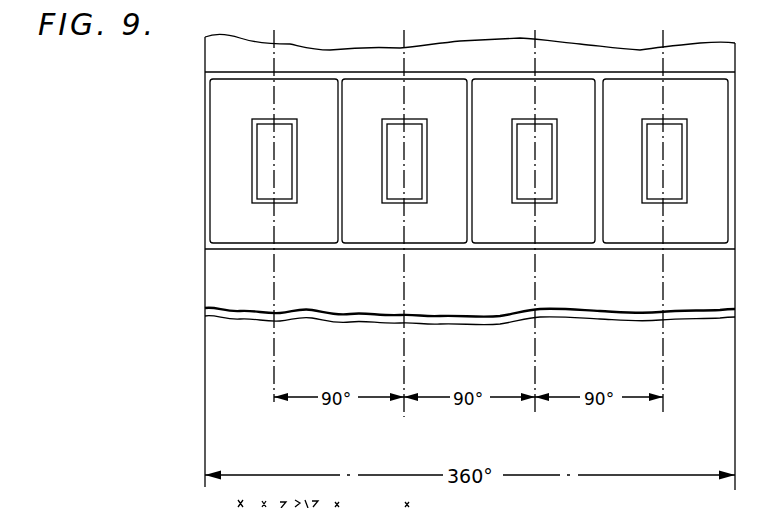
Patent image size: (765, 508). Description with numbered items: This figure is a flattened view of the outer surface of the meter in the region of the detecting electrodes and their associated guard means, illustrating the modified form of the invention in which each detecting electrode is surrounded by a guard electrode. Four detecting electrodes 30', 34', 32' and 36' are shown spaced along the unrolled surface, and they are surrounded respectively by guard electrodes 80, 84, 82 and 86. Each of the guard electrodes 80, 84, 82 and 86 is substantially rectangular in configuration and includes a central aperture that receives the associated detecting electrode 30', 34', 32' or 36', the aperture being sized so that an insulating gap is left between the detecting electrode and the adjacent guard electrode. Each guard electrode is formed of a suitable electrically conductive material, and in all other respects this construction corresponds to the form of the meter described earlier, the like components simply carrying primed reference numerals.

The guard electrode 80 is at (238, 225).
The guard electrode 84 is at (357, 230).
The guard electrode 82 is at (493, 232).
The guard electrode 86 is at (620, 235).
The detecting electrode 30' is at (292, 177).
The detecting electrode 34' is at (419, 177).
The detecting electrode 32' is at (549, 178).
The detecting electrode 36' is at (678, 178).